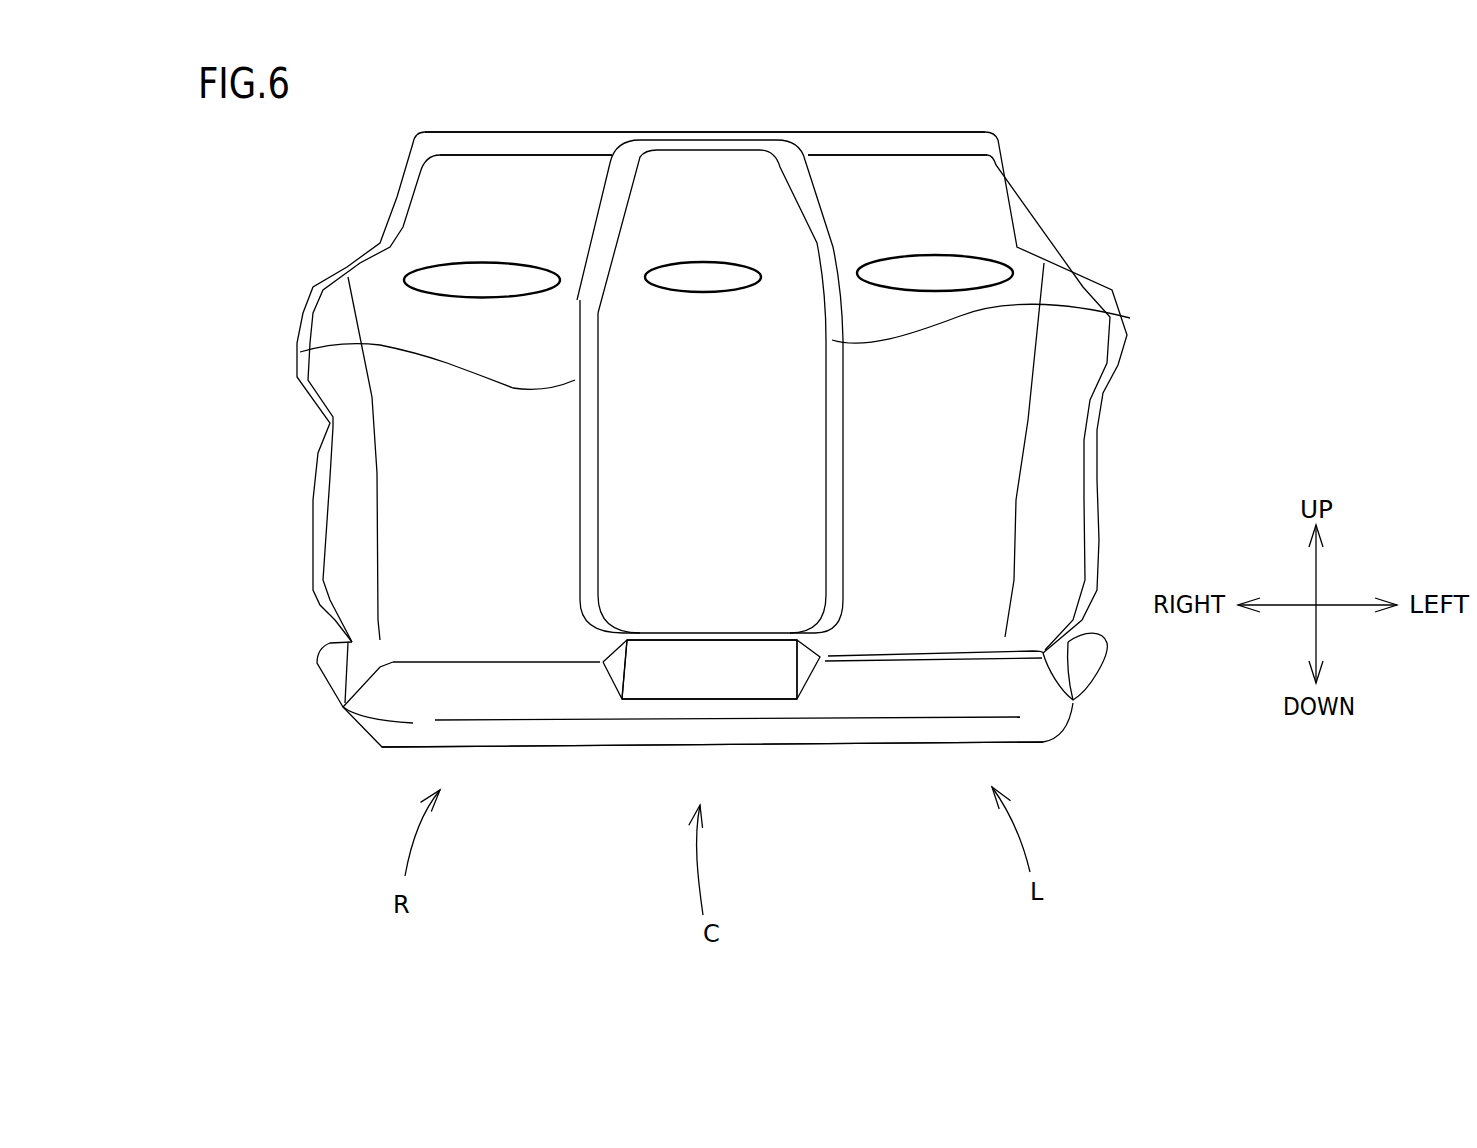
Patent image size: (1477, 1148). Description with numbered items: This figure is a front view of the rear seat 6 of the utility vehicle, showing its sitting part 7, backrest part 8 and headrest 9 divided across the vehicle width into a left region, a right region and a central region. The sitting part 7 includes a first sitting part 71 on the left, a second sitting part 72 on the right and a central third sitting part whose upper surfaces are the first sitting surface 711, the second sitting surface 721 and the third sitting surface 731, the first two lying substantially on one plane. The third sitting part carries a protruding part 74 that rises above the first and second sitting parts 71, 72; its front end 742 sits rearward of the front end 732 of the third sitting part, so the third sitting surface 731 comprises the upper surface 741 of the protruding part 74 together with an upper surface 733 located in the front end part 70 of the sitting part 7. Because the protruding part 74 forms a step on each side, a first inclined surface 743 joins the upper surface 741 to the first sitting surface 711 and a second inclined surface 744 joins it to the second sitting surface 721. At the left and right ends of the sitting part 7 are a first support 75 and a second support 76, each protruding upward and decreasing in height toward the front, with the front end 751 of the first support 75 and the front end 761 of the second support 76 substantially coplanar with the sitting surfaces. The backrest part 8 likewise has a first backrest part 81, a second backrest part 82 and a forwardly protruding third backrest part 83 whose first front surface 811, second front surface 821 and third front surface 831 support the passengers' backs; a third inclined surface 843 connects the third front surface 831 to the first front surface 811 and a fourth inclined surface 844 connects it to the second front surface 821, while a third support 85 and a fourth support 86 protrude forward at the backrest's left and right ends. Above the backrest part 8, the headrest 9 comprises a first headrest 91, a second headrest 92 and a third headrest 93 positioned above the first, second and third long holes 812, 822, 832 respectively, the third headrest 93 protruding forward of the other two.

The rear seat 6 is at (1253, 147).
The sitting part 7 is at (288, 657).
The backrest part 8 is at (290, 318).
The headrest 9 is at (998, 135).
The first headrest 91 is at (987, 222).
The second headrest 92 is at (460, 190).
The third headrest 93 is at (732, 215).
The first backrest part 81 is at (948, 435).
The first front surface 811 is at (1000, 367).
The first long hole 812 is at (953, 256).
The second backrest part 82 is at (462, 478).
The second front surface 821 is at (403, 408).
The second long hole 822 is at (533, 263).
The third backrest part 83 is at (733, 373).
The third front surface 831 is at (720, 347).
The third long hole 832 is at (677, 263).
The third inclined surface 843 is at (1130, 318).
The fourth inclined surface 844 is at (300, 352).
The third support 85 is at (1050, 460).
The fourth support 86 is at (358, 502).
The front end part 70 is at (1045, 708).
The first sitting part 71 is at (957, 702).
The first sitting surface 711 is at (990, 702).
The second sitting part 72 is at (493, 705).
The second sitting surface 721 is at (455, 683).
The third sitting surface 731 is at (656, 860).
The front end of third sitting part 732 is at (682, 717).
The upper surface 733 is at (638, 710).
The protruding part 74 is at (747, 668).
The upper surface of protruding part 741 is at (686, 677).
The front end of protruding part 742 is at (742, 700).
The first inclined surface 743 is at (812, 660).
The second inclined surface 744 is at (607, 663).
The first support 75 is at (1092, 658).
The front end of first support 751 is at (1073, 705).
The second support 76 is at (350, 640).
The front end of second support 761 is at (343, 707).